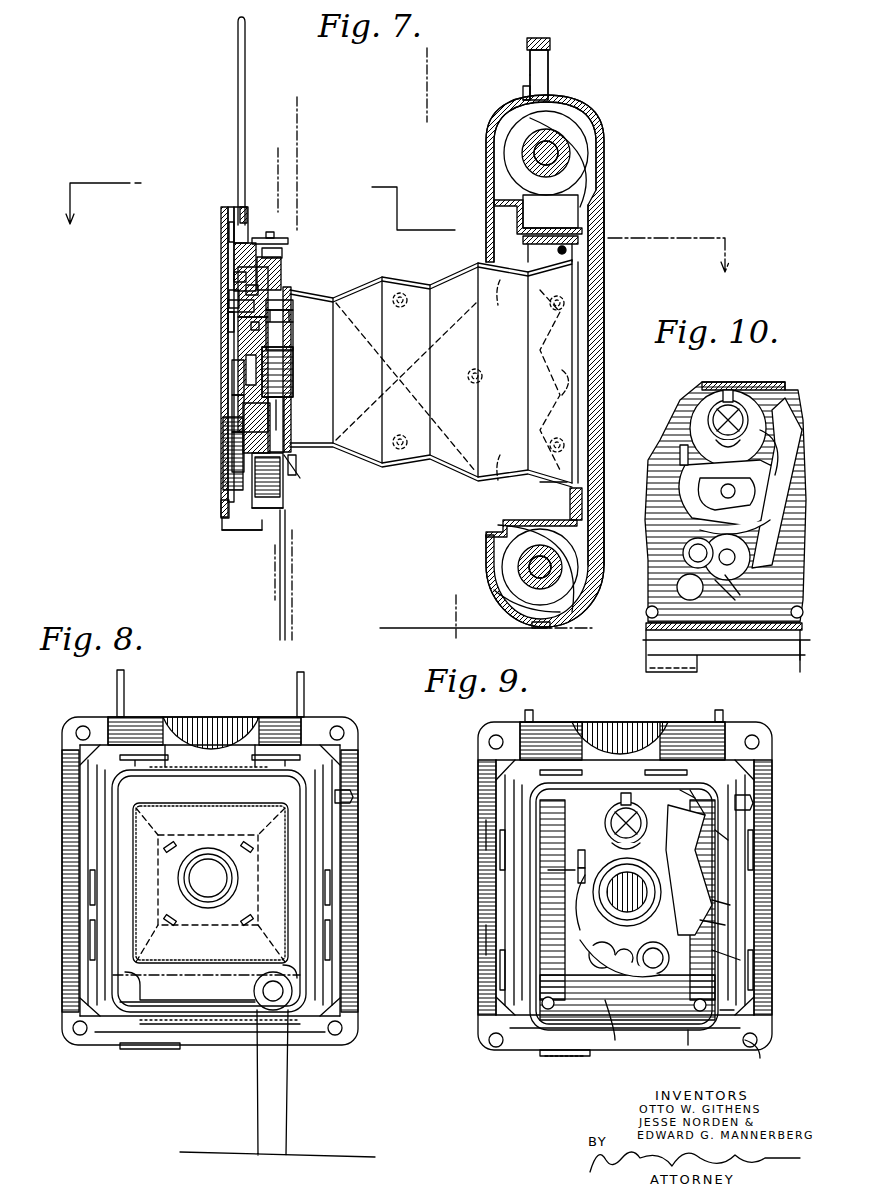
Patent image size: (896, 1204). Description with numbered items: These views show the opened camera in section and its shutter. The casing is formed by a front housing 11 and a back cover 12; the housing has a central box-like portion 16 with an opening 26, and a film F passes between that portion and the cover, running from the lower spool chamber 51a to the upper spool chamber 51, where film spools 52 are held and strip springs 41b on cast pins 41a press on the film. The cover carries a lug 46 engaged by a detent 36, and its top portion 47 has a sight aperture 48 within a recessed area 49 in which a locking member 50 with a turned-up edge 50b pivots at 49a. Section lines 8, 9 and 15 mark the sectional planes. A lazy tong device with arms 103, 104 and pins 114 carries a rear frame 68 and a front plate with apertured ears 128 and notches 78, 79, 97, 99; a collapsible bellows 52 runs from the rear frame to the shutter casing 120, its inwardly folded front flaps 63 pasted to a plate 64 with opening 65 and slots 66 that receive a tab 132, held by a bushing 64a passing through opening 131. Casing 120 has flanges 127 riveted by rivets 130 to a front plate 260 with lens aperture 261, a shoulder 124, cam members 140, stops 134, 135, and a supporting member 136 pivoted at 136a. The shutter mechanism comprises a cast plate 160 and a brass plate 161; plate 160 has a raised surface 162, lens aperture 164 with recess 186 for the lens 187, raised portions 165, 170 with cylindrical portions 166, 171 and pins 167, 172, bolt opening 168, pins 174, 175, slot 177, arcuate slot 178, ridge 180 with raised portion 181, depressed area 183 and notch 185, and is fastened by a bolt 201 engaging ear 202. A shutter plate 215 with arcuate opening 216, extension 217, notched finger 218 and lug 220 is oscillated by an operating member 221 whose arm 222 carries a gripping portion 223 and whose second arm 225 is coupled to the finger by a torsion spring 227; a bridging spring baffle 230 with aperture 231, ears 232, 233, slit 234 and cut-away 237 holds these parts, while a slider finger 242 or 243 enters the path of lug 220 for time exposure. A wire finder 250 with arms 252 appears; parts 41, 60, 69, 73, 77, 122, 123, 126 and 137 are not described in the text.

In FIG. 7, the section line 8- 8 is at (280, 100).
In FIG. 7, the section line 9- 9 is at (268, 151).
In FIG. 7, the camera housing / section line 11- 11 is at (488, 125).
In FIG. 7, the section line 15- 15 is at (414, 61).
In FIG. 7, the film spool 12 is at (565, 135).
In FIG. 7, the spool support 16 is at (495, 223).
In FIG. 7, the back wall 26 is at (605, 455).
In FIG. 7, the bottom wall 36 is at (605, 590).
In FIG. 7, the camera body 41 is at (560, 128).
In FIG. 7, the front wall portion 41a is at (494, 150).
In FIG. 7, the rear wall portion 41b is at (600, 140).
In FIG. 7, the bottom fastener 46 is at (541, 630).
In FIG. 7, the winding knob 47 is at (539, 40).
In FIG. 7, the knob shaft 48 is at (548, 70).
In FIG. 7, the knob cap 49 is at (548, 46).
In FIG. 7, the cap flange 49a is at (528, 45).
In FIG. 7, the knob bearing 50 is at (529, 65).
In FIG. 7, the bearing tab 50b is at (523, 90).
In FIG. 7, the film guide plate 51 is at (594, 207).
In FIG. 7, the lower film spool 51a is at (588, 555).
In FIG. 7, the inner wall 52 is at (600, 160).
In FIG. 7, the bellows 60 is at (405, 273).
In FIG. 7, the lens board 63 is at (292, 295).
In FIG. 8, the lens board 63 is at (320, 955).
In FIG. 7, the lens mount 64 is at (292, 300).
In FIG. 7, the lens mount flange 64a is at (293, 380).
In FIG. 7, the lens 65 is at (284, 410).
In FIG. 8, the lens 65 is at (240, 878).
In FIG. 8, the corner clips 66 is at (245, 845).
In FIG. 7, the film aperture plate 68 is at (554, 501).
In FIG. 7, the aperture 69 is at (555, 495).
In FIG. 7, the spool platform 73 is at (590, 228).
In FIG. 7, the film guide 77 is at (538, 300).
In FIG. 7, the guide roller 78 is at (491, 380).
In FIG. 7, the pressure member 79 is at (552, 377).
In FIG. 9, the side rail 97 is at (478, 772).
In FIG. 9, the shutter blade 99 is at (555, 880).
In FIG. 9, the slot 103 is at (490, 940).
In FIG. 9, the slot 104 is at (482, 835).
In FIG. 9, the guide lug 114 is at (480, 800).
In FIG. 7, the shutter housing 120 is at (262, 520).
In FIG. 9, the shutter housing 120 is at (545, 800).
In FIG. 7, the front plate 122 is at (290, 242).
In FIG. 8, the front plate 122 is at (128, 793).
In FIG. 7, the retaining ring 123 is at (285, 500).
In FIG. 8, the retaining ring 123 is at (225, 767).
In FIG. 7, the cover plate 124 is at (230, 212).
In FIG. 8, the cover plate 124 is at (173, 767).
In FIG. 9, the cover plate 124 is at (545, 1040).
In FIG. 8, the side wall 126 is at (100, 880).
In FIG. 8, the slot 127 is at (95, 960).
In FIG. 9, the slot 127 is at (730, 1010).
In FIG. 8, the frame 128 is at (325, 735).
In FIG. 9, the frame 128 is at (740, 1035).
In FIG. 7, the corner screw 130 is at (224, 210).
In FIG. 8, the corner screw 130 is at (76, 733).
In FIG. 9, the corner screw 130 is at (488, 1048).
In FIG. 7, the spring 131 is at (290, 320).
In FIG. 8, the dashed mask outline 132 is at (255, 838).
In FIG. 8, the base plate 134 is at (128, 975).
In FIG. 8, the bracket 135 is at (292, 970).
In FIG. 7, the handle 136 is at (286, 595).
In FIG. 8, the handle 136 is at (285, 1112).
In FIG. 7, the handle pivot 136a is at (295, 468).
In FIG. 8, the handle pivot 136a is at (278, 1000).
In FIG. 8, the pivot axis 137 is at (300, 985).
In FIG. 7, the clip 140 is at (269, 232).
In FIG. 8, the clip 140 is at (125, 760).
In FIG. 9, the clip 140 is at (495, 750).
In FIG. 7, the shutter ring 160 is at (233, 490).
In FIG. 7, the screw 161 is at (224, 515).
In FIG. 7, the bushing 162 is at (238, 462).
In FIG. 7, the housing body 164 is at (245, 362).
In FIG. 7, the upper bushing 165 is at (240, 262).
In FIG. 7, the spring 166 is at (270, 255).
In FIG. 7, the spring seat 167 is at (280, 268).
In FIG. 7, the collar 168 is at (240, 285).
In FIG. 7, the washer 170 is at (238, 440).
In FIG. 7, the washer 171 is at (238, 410).
In FIG. 7, the stud 172 is at (240, 380).
In FIG. 9, the stud 172 is at (688, 1047).
In FIG. 10, the bottom plate 174 is at (656, 642).
In FIG. 9, the bottom plate 174 is at (562, 1058).
In FIG. 10, the post 175 is at (795, 660).
In FIG. 9, the post 175 is at (758, 1060).
In FIG. 9, the shutter leaf 177 is at (550, 870).
In FIG. 9, the link 178 is at (728, 840).
In FIG. 10, the lever 180 is at (770, 430).
In FIG. 9, the lever 180 is at (680, 880).
In FIG. 10, the lever arm 181 is at (800, 480).
In FIG. 9, the lever arm 181 is at (725, 925).
In FIG. 8, the top plate 183 is at (138, 735).
In FIG. 9, the top plate 183 is at (553, 738).
In FIG. 7, the recess 185 is at (238, 208).
In FIG. 8, the recess 185 is at (197, 745).
In FIG. 9, the recess 185 is at (606, 755).
In FIG. 7, the sleeve 186 is at (240, 308).
In FIG. 7, the pin 187 is at (230, 318).
In FIG. 7, the gear 201 is at (250, 290).
In FIG. 9, the gear 201 is at (610, 828).
In FIG. 7, the gear shaft 202 is at (236, 277).
In FIG. 7, the cam 215 is at (292, 330).
In FIG. 10, the cam 215 is at (785, 540).
In FIG. 9, the cam 215 is at (640, 1000).
In FIG. 10, the cam follower 216 is at (690, 490).
In FIG. 9, the cam follower 216 is at (680, 972).
In FIG. 9, the pawl 217 is at (590, 960).
In FIG. 9, the spring 218 is at (585, 990).
In FIG. 10, the lever 220 is at (694, 440).
In FIG. 9, the lever 220 is at (730, 905).
In FIG. 9, the pin 221 is at (695, 792).
In FIG. 7, the arm 222 is at (232, 247).
In FIG. 9, the arm 222 is at (682, 790).
In FIG. 10, the release button 223 is at (740, 400).
In FIG. 8, the release button 223 is at (352, 795).
In FIG. 9, the release button 223 is at (752, 800).
In FIG. 10, the spring 225 is at (804, 598).
In FIG. 9, the spring 225 is at (740, 960).
In FIG. 7, the spring 227 is at (300, 460).
In FIG. 10, the spring 227 is at (686, 578).
In FIG. 9, the spring 227 is at (616, 1042).
In FIG. 9, the shutter opening 230 is at (592, 895).
In FIG. 7, the pin 231 is at (250, 370).
In FIG. 9, the gear 232 is at (606, 818).
In FIG. 9, the plate 233 is at (620, 1035).
In FIG. 9, the stud 234 is at (633, 793).
In FIG. 9, the stop 237 is at (580, 872).
In FIG. 10, the pin 242 is at (690, 470).
In FIG. 9, the pin 242 is at (580, 855).
In FIG. 7, the tab 243 is at (240, 530).
In FIG. 10, the tab 243 is at (700, 668).
In FIG. 8, the tab 243 is at (135, 1050).
In FIG. 9, the tab 243 is at (557, 1060).
In FIG. 7, the rod 250 is at (236, 62).
In FIG. 8, the post 252 is at (117, 683).
In FIG. 9, the post 252 is at (525, 718).
In FIG. 7, the nut 260 is at (234, 290).
In FIG. 7, the pin 261 is at (250, 325).
In FIG. 7, the film F is at (578, 192).